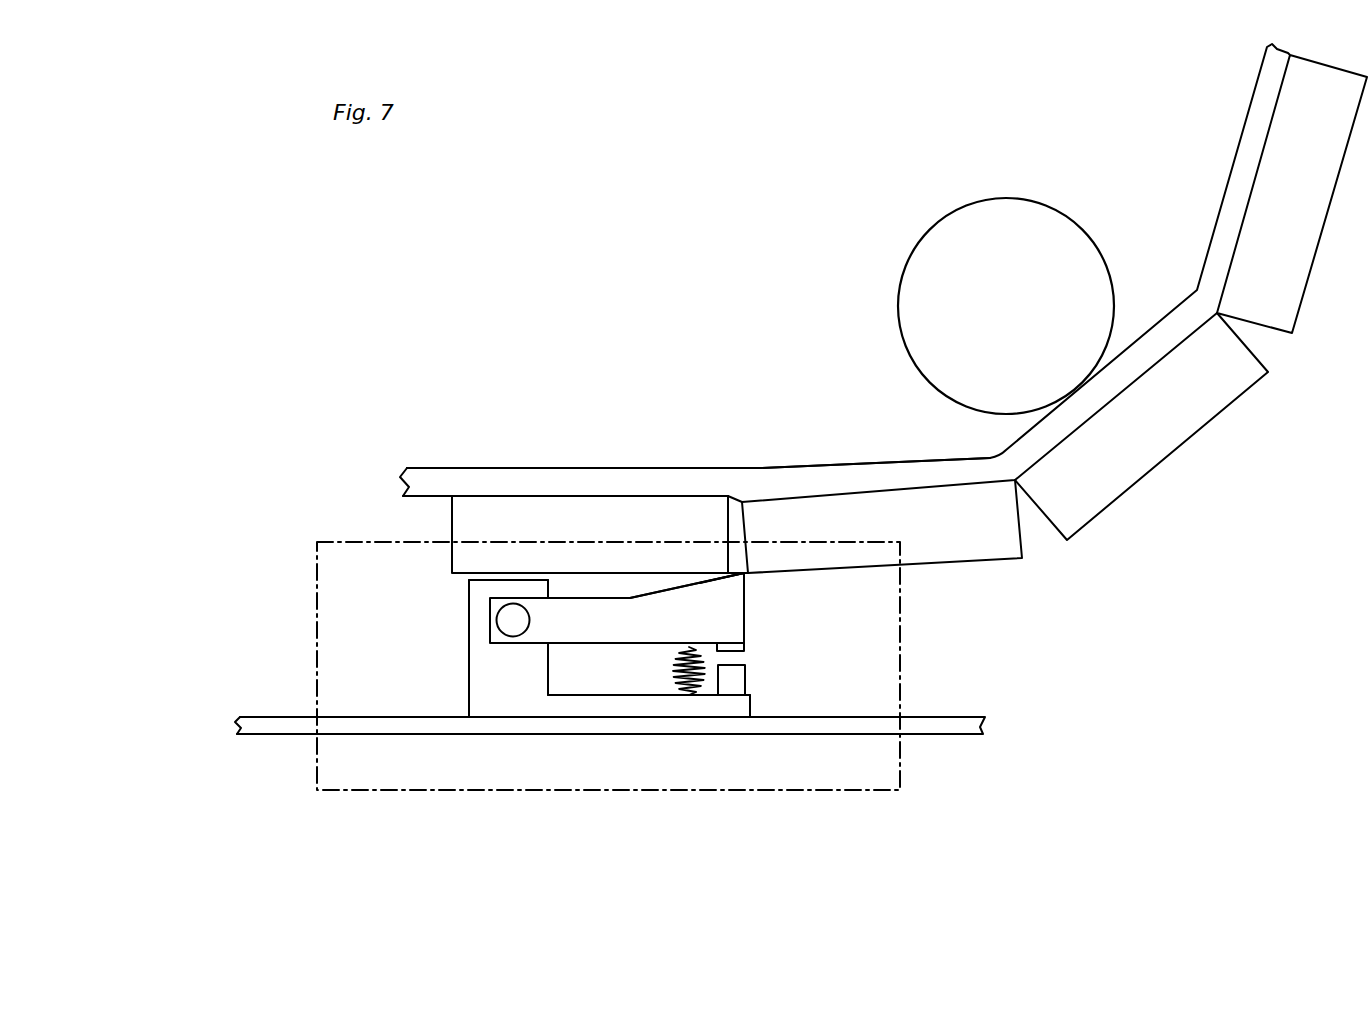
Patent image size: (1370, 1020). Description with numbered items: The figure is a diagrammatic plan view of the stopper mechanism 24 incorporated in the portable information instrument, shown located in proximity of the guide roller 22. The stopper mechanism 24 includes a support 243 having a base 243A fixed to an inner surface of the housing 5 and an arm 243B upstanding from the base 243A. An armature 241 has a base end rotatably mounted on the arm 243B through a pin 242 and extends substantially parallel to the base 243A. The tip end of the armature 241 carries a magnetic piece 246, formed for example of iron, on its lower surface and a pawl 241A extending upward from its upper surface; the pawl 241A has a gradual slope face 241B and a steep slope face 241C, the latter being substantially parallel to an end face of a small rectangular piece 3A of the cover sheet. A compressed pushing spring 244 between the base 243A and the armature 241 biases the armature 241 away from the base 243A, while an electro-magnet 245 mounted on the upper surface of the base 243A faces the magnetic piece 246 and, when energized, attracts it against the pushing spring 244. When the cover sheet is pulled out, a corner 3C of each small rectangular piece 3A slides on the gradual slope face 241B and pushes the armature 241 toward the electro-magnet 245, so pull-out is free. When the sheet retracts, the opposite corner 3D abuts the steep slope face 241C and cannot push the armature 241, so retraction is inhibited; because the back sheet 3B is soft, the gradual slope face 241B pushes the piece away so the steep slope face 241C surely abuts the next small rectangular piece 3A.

The small rectangular piece 3A is at (1012, 537).
The back sheet 3B is at (897, 473).
The corner 3C is at (716, 568).
The opposite corner 3D is at (768, 565).
The housing 5 is at (288, 733).
The guide roller 22 is at (1035, 226).
The stopper mechanism 24 is at (358, 541).
The armature 241 is at (583, 597).
The pawl 241A is at (720, 593).
The gradual slope face 241B is at (663, 590).
The steep slope face 241C is at (748, 585).
The pin 242 is at (500, 620).
The support 243 is at (503, 713).
The base 243A is at (620, 707).
The arm 243B is at (482, 633).
The pushing spring 244 is at (702, 677).
The electro-magnet 245 is at (733, 683).
The magnetic piece 246 is at (745, 645).